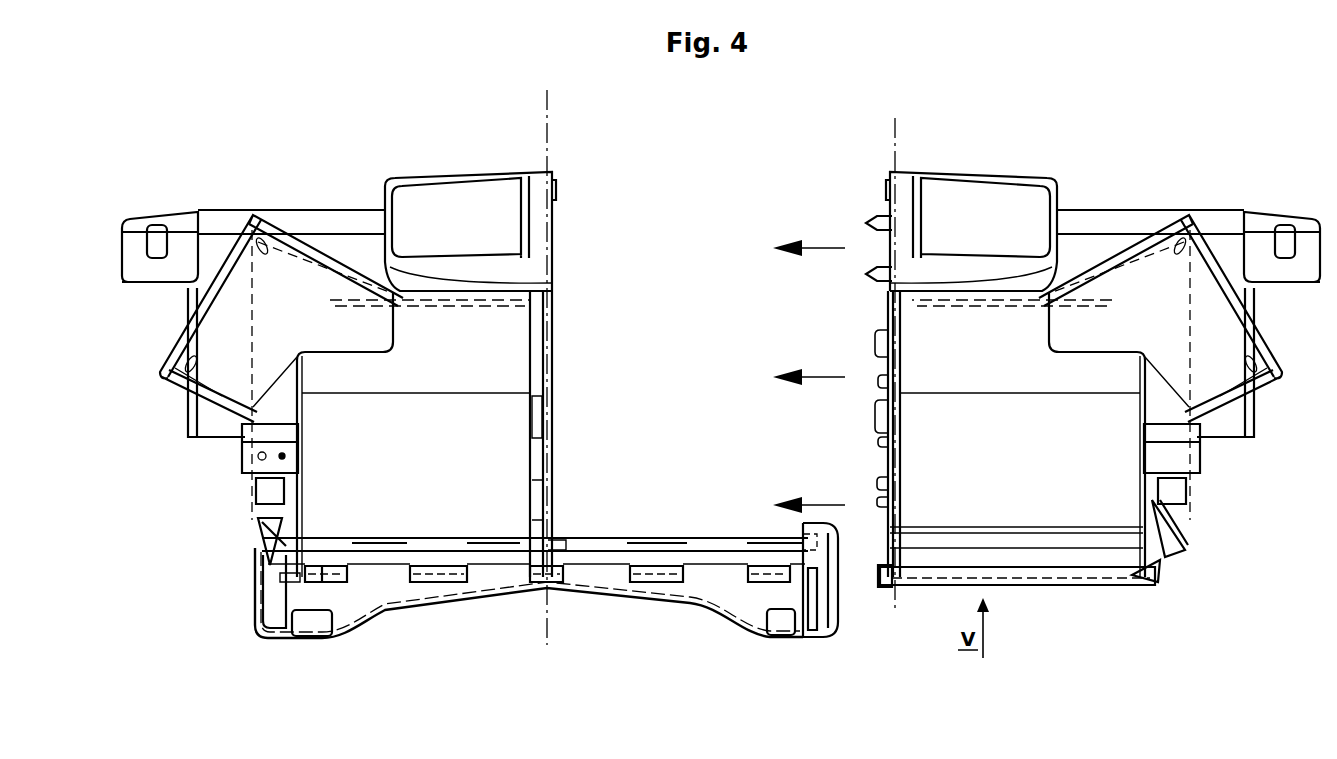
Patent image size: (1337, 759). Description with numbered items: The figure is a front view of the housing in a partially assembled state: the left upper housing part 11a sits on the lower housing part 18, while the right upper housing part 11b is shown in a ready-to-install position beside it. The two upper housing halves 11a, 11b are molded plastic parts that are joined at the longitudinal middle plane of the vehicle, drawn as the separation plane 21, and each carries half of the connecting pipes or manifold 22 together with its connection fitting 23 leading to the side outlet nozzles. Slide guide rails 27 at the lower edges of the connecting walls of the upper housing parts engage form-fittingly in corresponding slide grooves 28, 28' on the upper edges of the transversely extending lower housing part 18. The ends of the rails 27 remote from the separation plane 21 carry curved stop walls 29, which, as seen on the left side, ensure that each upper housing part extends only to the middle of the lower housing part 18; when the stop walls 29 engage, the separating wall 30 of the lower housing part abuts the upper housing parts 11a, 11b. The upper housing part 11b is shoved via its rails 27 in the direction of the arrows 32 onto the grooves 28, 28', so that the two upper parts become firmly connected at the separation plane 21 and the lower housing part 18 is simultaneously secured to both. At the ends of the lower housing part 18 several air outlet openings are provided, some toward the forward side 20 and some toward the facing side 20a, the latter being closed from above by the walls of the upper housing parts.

The upper housing part 11a is at (340, 210).
The upper housing part 11b is at (1125, 204).
The lower housing part 18 is at (701, 600).
The outlet opening 20 is at (312, 634).
The outlet opening 20a is at (263, 598).
The separation plane 21 is at (555, 150).
The connecting pipes or manifold 22 is at (1016, 190).
The connection fitting 23 is at (1240, 348).
The slide guide rail 27 is at (1040, 585).
The slide groove 28 is at (536, 602).
The slide groove 28' is at (535, 515).
The curved stop wall 29 is at (263, 556).
The separating wall 30 is at (560, 548).
The arrows 32 is at (824, 381).